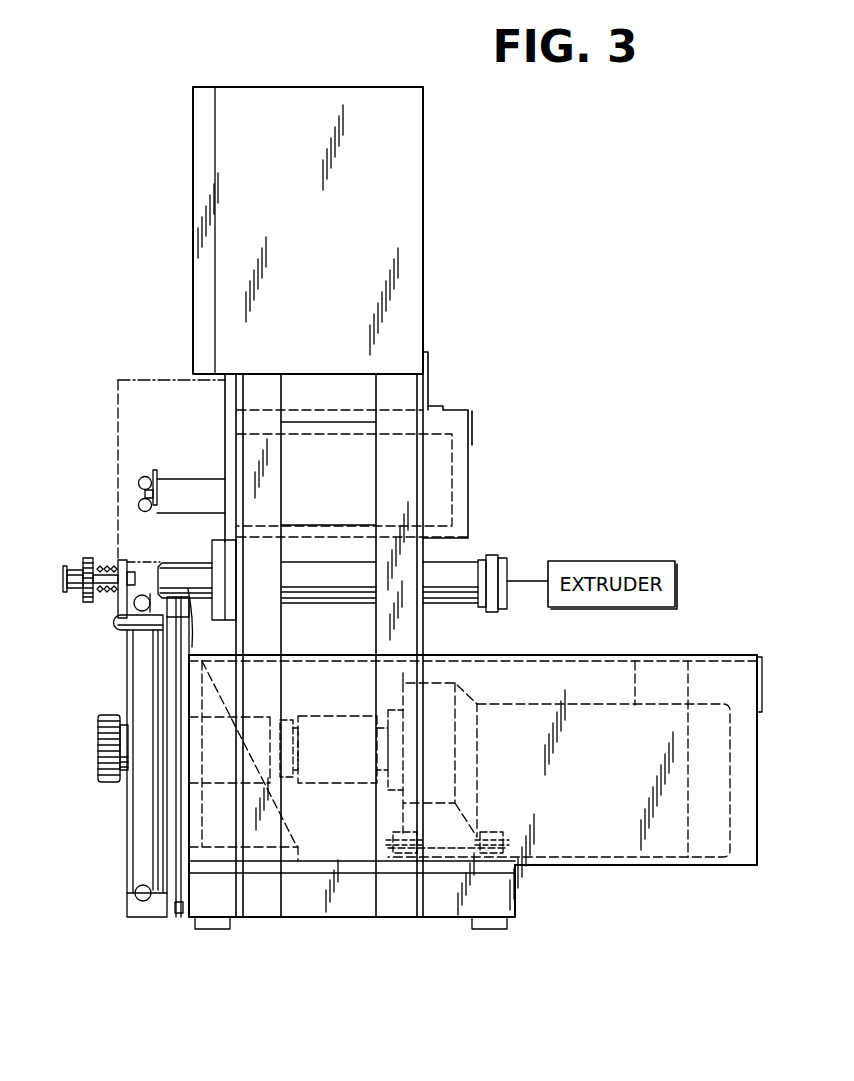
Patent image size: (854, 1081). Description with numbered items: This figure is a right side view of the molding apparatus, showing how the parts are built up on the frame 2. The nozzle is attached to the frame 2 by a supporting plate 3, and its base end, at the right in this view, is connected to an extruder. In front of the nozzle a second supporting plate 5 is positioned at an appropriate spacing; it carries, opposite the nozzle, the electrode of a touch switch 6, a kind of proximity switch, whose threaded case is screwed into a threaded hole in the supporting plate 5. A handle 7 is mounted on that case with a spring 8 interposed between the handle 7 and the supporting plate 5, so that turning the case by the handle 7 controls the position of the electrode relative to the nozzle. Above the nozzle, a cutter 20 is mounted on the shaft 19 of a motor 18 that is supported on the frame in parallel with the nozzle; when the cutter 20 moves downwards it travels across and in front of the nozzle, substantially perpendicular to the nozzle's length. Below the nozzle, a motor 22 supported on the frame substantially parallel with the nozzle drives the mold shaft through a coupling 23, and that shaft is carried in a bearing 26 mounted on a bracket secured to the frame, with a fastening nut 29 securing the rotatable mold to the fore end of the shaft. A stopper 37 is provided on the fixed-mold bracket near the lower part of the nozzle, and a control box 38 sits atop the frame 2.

The frame 2 is at (407, 633).
The supporting plate 3 is at (225, 440).
The supporting plate 5 is at (121, 604).
The touch switch 6 is at (130, 570).
The handle 7 is at (86, 566).
The spring 8 is at (109, 566).
The motor 18 is at (447, 478).
The shaft 19 is at (182, 498).
The cutter 20 is at (155, 469).
The motor 22 is at (636, 657).
The coupling 23 is at (303, 715).
The bearing 26 is at (250, 718).
The fastening nut 29 is at (112, 715).
The stopper 37 is at (120, 626).
The control box 38 is at (424, 284).